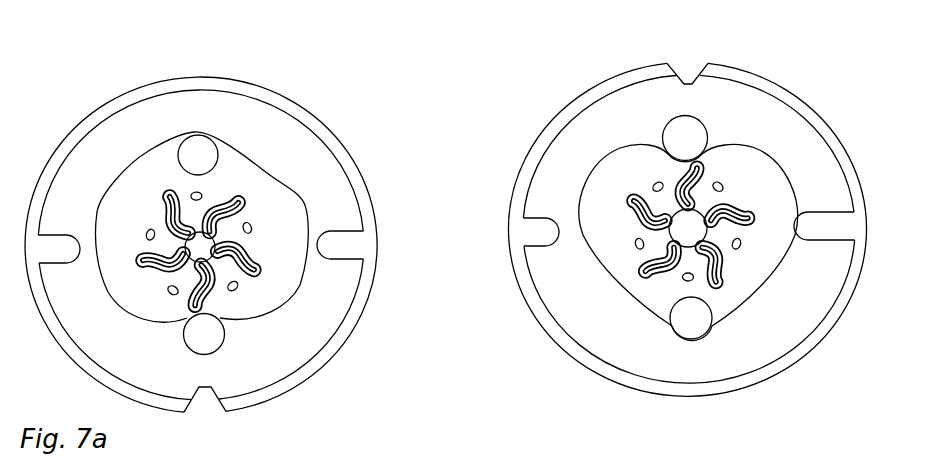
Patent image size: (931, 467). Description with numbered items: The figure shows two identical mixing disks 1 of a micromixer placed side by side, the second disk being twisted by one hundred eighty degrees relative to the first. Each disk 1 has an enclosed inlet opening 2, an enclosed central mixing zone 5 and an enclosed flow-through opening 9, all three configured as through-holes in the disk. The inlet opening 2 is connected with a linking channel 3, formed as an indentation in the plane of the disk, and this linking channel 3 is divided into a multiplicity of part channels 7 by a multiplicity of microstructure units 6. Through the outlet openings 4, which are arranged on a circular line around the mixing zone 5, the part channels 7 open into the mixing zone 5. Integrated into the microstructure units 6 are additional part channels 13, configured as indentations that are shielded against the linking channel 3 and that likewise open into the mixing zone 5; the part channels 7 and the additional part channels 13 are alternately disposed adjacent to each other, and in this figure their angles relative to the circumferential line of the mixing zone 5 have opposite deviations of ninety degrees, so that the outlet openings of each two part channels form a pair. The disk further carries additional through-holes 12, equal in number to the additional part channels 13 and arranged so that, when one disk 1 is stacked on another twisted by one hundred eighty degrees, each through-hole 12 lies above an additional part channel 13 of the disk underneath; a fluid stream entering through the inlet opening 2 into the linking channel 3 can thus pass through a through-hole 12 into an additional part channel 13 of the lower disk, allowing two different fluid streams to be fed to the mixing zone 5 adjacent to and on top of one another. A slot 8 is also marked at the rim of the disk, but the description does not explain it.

The disk 1 is at (148, 122).
The inlet opening 2 is at (198, 150).
The linking channel 3 is at (233, 165).
The outlet openings 4 is at (260, 255).
The mixing zone 5 is at (190, 237).
The microstructure units 6 is at (250, 226).
The part channels 7 is at (215, 272).
The locking slot 8 is at (343, 238).
The flow-through opening 9 is at (207, 333).
The through-holes 12 is at (198, 195).
The additional part channels 13 is at (182, 262).